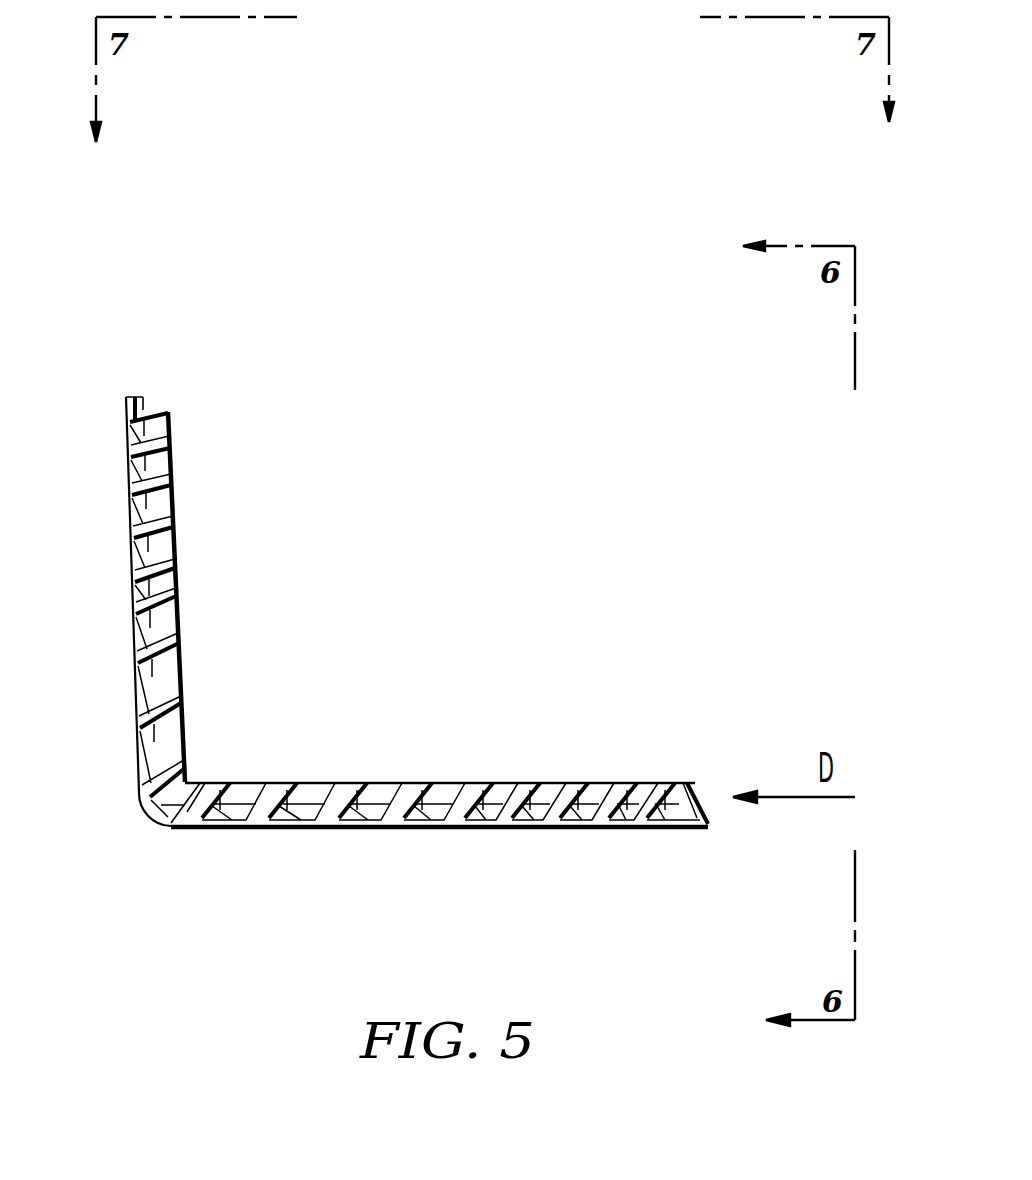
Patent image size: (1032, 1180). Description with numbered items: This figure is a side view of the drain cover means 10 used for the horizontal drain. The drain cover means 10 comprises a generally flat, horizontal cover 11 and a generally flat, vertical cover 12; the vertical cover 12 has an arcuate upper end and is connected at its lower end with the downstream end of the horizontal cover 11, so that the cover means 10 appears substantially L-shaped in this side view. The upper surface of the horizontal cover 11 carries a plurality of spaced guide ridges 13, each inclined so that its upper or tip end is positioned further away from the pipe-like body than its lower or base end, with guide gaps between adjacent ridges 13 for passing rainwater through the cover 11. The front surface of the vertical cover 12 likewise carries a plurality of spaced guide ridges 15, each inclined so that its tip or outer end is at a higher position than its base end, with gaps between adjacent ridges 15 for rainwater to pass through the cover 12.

The drain cover means 10 is at (300, 678).
The horizontal cover 11 is at (472, 830).
The vertical cover 12 is at (134, 616).
The guide ridges 13 is at (213, 783).
The guide ridges 15 is at (170, 415).